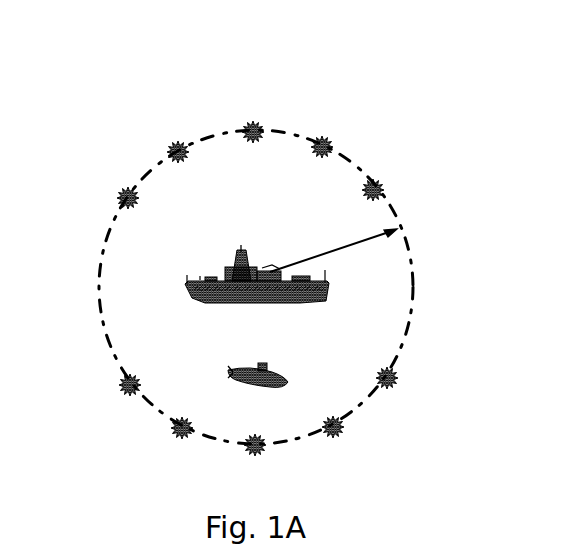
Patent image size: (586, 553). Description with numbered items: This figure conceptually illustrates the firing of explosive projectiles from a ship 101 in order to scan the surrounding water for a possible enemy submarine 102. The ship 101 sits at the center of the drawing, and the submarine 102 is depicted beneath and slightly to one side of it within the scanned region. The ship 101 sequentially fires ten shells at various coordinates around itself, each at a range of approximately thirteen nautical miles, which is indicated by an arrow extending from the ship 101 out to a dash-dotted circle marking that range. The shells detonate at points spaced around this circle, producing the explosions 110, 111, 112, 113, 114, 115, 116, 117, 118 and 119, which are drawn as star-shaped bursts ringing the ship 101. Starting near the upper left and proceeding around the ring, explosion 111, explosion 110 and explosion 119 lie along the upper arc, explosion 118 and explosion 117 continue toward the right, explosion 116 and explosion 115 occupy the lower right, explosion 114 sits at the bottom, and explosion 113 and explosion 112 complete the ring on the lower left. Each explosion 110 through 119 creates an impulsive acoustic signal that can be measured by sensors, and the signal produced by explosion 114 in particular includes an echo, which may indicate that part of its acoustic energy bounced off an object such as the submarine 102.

The ship 101 is at (244, 250).
The enemy submarine 102 is at (262, 362).
The explosion 110 is at (170, 141).
The explosion 111 is at (120, 186).
The explosion 112 is at (122, 398).
The explosion 113 is at (178, 442).
The explosion 114 is at (250, 458).
The explosion 115 is at (340, 440).
The explosion 116 is at (394, 389).
The explosion 117 is at (382, 183).
The explosion 118 is at (325, 136).
The explosion 119 is at (258, 122).